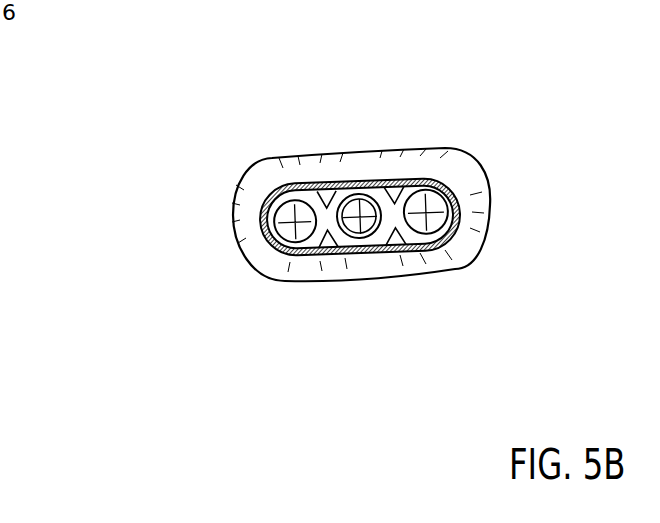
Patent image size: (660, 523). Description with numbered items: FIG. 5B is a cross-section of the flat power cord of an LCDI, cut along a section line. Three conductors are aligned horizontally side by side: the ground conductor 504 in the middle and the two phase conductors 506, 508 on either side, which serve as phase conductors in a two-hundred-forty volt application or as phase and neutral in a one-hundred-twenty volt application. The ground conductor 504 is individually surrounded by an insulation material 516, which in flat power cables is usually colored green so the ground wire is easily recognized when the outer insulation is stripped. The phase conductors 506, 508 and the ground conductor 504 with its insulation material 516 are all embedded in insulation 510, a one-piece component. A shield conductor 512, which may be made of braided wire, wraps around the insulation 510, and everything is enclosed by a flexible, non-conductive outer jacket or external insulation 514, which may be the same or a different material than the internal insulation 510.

The ground conductor 504 is at (369, 198).
The phase conductor 506 is at (272, 247).
The phase conductor 508 is at (430, 229).
The insulation 510 is at (397, 197).
The shield conductor 512 is at (283, 250).
The external insulation 514 is at (380, 279).
The insulation material 516 is at (370, 238).